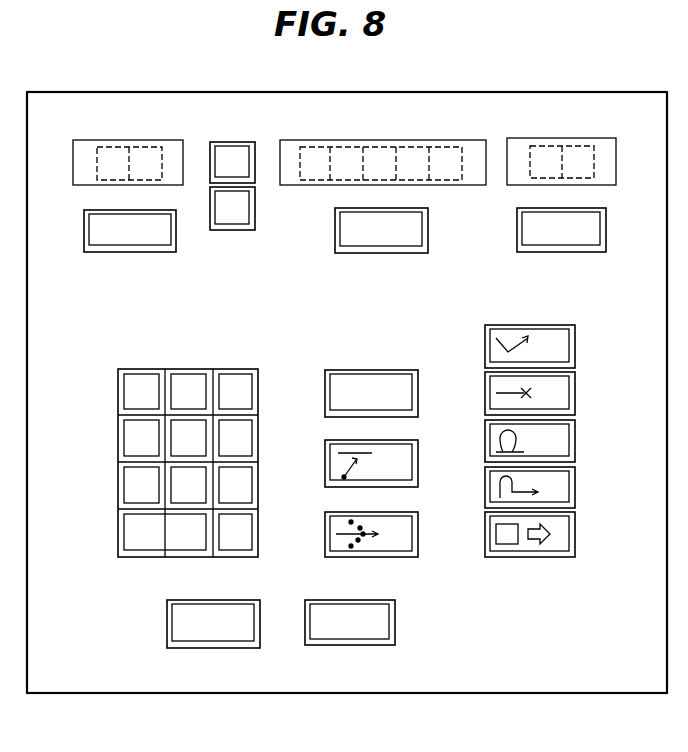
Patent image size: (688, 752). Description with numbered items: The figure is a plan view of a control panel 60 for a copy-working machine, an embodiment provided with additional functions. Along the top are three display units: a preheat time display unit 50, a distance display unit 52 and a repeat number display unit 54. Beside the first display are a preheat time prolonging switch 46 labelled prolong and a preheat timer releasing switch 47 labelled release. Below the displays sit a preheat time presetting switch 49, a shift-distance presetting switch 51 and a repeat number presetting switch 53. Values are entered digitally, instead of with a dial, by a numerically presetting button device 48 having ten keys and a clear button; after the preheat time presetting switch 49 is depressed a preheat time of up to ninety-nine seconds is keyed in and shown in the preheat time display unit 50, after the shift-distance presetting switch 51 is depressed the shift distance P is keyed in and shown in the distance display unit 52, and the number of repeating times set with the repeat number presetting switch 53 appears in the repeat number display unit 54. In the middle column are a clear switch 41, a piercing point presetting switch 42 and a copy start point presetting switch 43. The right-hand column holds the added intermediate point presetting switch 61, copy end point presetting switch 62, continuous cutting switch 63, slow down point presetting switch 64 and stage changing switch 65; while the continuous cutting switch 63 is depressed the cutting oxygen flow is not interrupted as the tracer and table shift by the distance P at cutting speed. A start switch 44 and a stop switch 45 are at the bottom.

The control panel 60 is at (93, 693).
The preheat time display unit 50 is at (82, 141).
The distance display unit 52 is at (355, 140).
The repeat number display unit 54 is at (526, 138).
The preheat time prolonging switch 46 is at (212, 156).
The preheat timer releasing switch 47 is at (255, 211).
The preheat time presetting switch 49 is at (84, 234).
The shift-distance presetting switch 51 is at (335, 241).
The repeat number presetting switch 53 is at (517, 243).
The numerically presetting button device 48 is at (118, 452).
The clear switch 41 is at (405, 372).
The piercing point presetting switch 42 is at (405, 451).
The copy start point presetting switch 43 is at (405, 522).
The intermediate point presetting switch 61 is at (576, 342).
The copy end point presetting switch 62 is at (576, 393).
The continuous cutting switch 63 is at (576, 441).
The slow down point presetting switch 64 is at (576, 489).
The stage changing switch 65 is at (576, 540).
The start switch 44 is at (167, 632).
The stop switch 45 is at (395, 638).